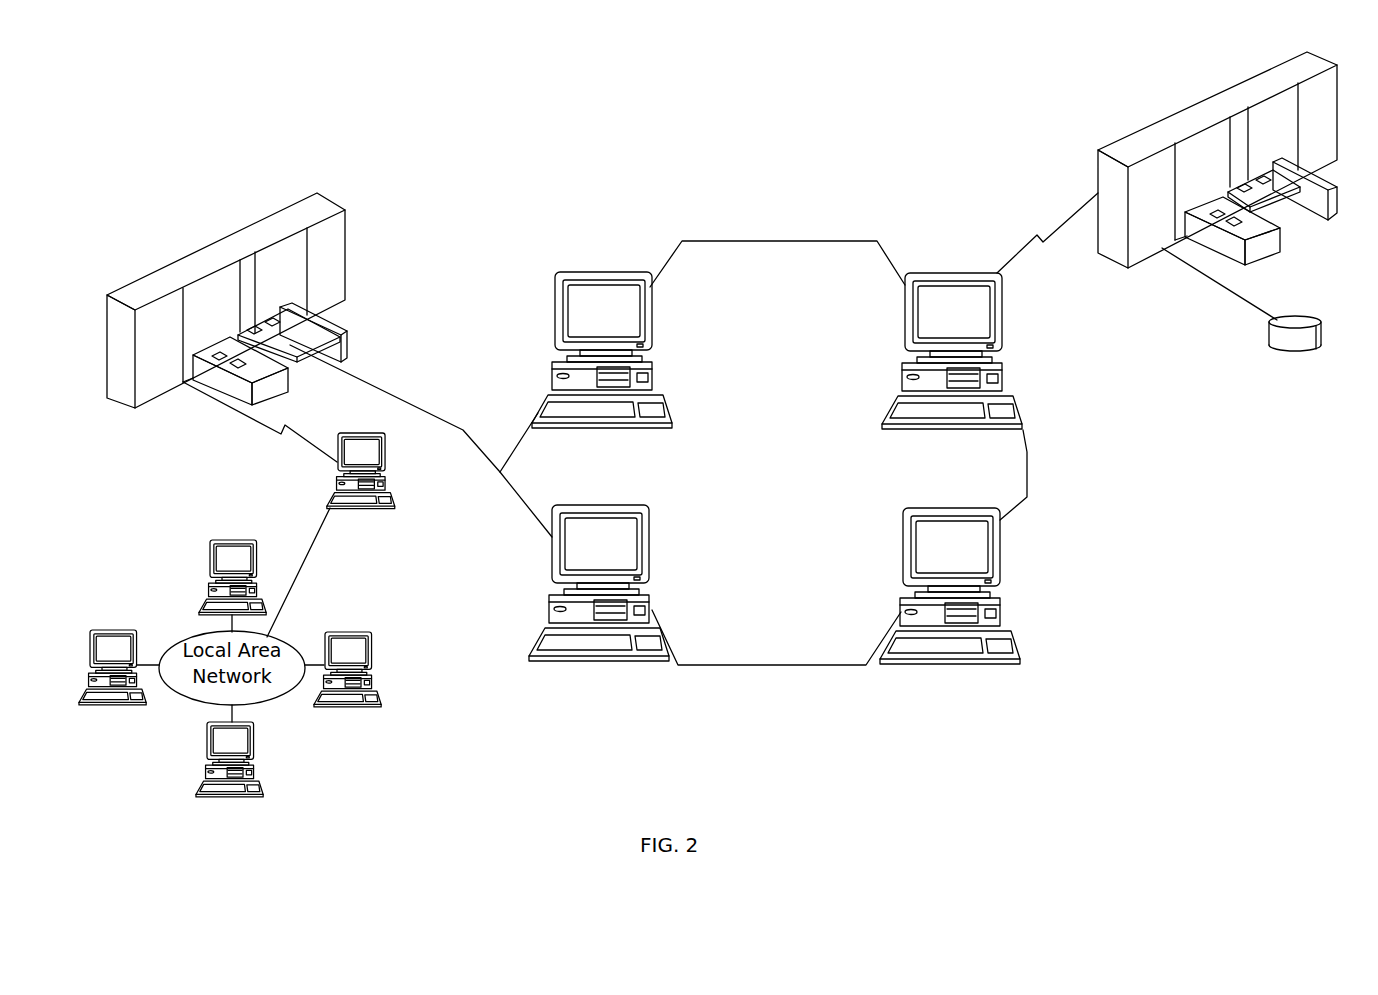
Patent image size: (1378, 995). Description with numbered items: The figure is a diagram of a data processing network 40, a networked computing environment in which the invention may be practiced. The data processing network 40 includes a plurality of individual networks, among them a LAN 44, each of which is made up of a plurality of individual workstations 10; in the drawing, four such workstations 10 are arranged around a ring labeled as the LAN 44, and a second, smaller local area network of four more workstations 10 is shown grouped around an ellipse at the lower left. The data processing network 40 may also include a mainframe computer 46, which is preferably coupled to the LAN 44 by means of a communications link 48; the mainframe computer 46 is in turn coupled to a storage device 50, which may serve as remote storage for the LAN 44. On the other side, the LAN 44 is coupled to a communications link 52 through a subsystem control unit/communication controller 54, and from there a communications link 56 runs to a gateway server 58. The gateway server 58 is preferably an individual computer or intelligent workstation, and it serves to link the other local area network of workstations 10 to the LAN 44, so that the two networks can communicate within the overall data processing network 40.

The workstation 10 is at (602, 272).
The data processing network 40 is at (838, 424).
The LAN 44 is at (838, 453).
The mainframe computer 46 is at (1173, 113).
The communications link 48 is at (1073, 213).
The storage device 50 is at (1303, 322).
The communications link 52 is at (383, 393).
The subsystem control unit/communication controller 54 is at (223, 238).
The communications link 56 is at (233, 415).
The gateway server 58 is at (387, 453).